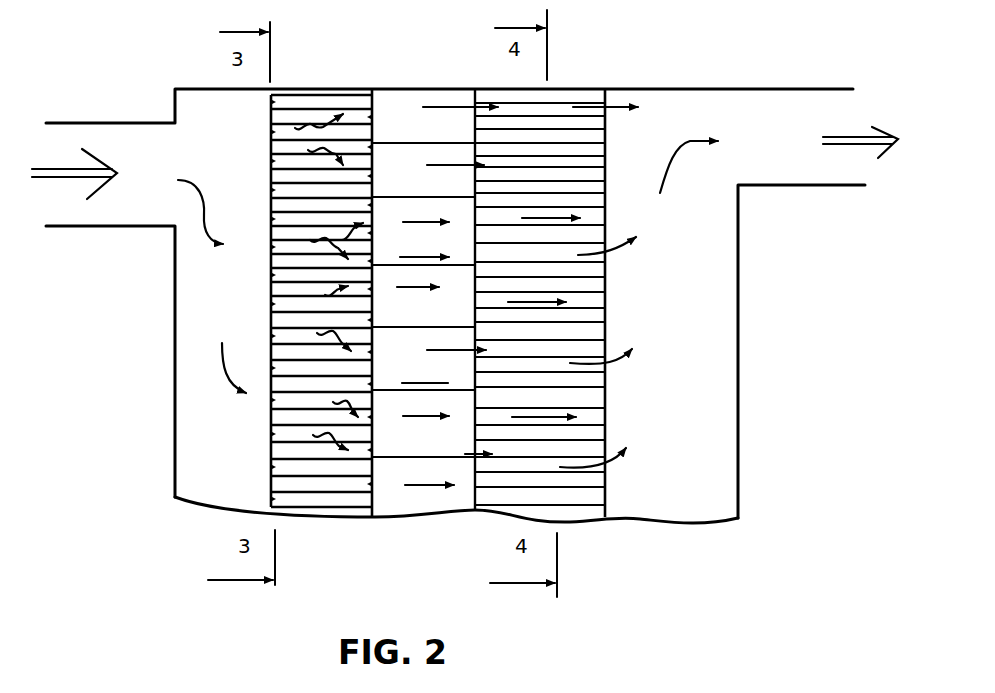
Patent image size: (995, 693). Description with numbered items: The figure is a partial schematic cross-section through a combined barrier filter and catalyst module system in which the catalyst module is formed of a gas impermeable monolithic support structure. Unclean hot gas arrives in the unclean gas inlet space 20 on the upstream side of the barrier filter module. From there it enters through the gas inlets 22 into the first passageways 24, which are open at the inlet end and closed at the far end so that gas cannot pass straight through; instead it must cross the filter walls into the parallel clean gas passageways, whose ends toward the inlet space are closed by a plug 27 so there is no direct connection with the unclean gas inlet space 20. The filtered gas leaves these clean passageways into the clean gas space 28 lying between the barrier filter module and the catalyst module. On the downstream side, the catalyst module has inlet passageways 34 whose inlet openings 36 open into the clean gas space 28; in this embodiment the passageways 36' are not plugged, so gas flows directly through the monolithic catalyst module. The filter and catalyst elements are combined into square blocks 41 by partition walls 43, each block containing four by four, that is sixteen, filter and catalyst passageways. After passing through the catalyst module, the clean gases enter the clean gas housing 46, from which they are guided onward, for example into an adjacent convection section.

The unclean gas inlet space 20 is at (234, 310).
The gas inlets 22 is at (272, 397).
The first passageways 24 is at (287, 430).
The plug 27 is at (271, 108).
The clean gas space 28 is at (435, 316).
The inlet passageways 34 is at (588, 414).
The inlet openings 36 is at (506, 335).
The passageways 36' is at (599, 276).
The square blocks 41 is at (397, 103).
The partition walls 43 is at (392, 143).
The clean gas housing 46 is at (697, 317).